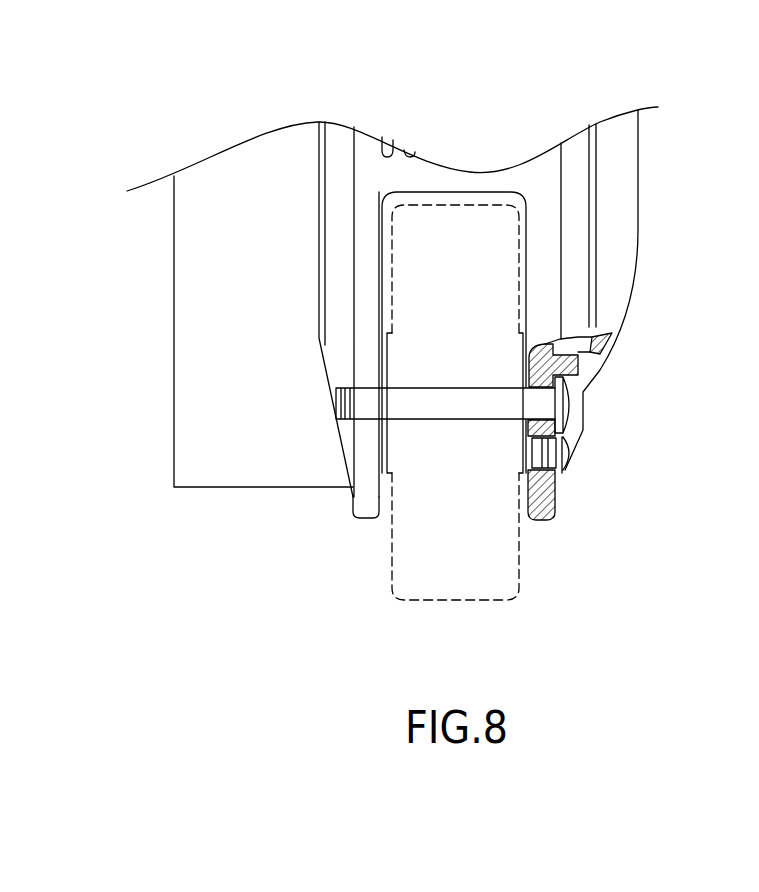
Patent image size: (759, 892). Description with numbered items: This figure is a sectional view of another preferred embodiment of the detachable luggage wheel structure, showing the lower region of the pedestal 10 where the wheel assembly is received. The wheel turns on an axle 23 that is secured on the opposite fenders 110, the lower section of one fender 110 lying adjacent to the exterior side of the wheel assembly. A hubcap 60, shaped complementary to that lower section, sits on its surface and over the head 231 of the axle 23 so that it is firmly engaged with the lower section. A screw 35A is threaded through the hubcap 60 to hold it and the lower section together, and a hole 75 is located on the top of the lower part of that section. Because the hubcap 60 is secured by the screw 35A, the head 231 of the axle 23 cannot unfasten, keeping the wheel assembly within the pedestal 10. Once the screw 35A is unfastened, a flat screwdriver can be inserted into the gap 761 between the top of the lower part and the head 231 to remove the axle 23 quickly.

The pedestal 10 is at (642, 230).
The axle 23 is at (423, 411).
The head 231 is at (563, 403).
The screw 35A is at (573, 470).
The hubcap 60 is at (600, 381).
The hole 75 is at (560, 483).
The fender 110 is at (358, 493).
The gap 761 is at (528, 438).